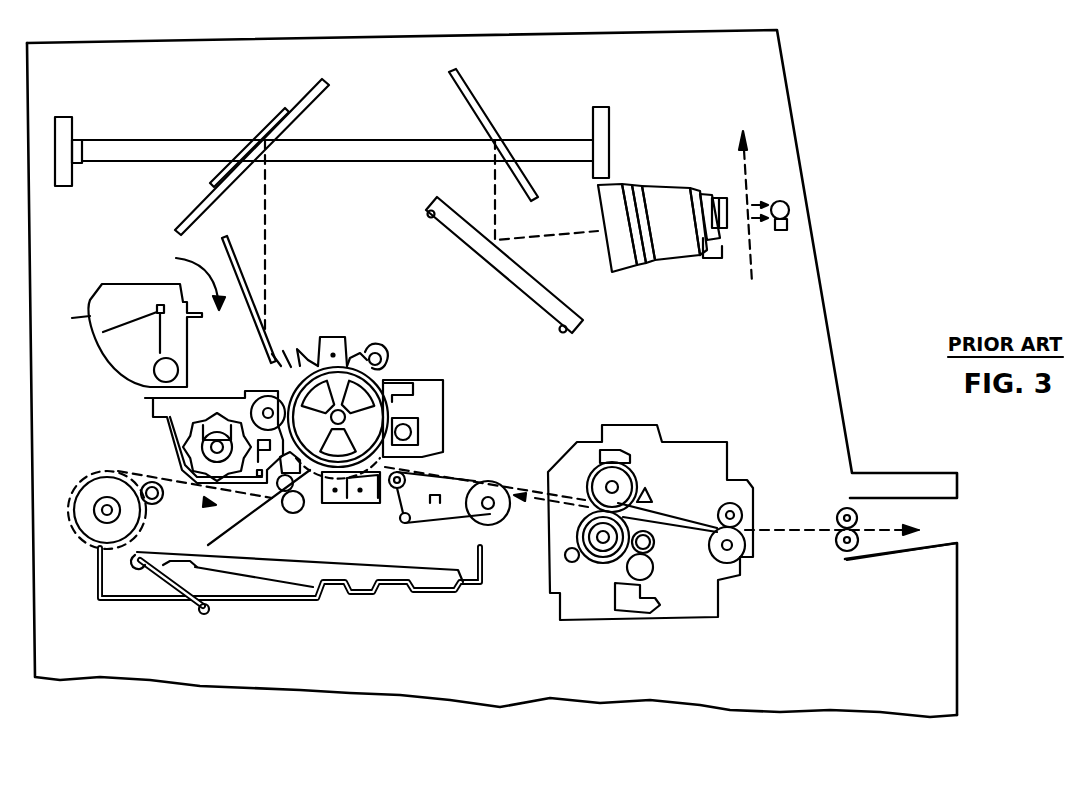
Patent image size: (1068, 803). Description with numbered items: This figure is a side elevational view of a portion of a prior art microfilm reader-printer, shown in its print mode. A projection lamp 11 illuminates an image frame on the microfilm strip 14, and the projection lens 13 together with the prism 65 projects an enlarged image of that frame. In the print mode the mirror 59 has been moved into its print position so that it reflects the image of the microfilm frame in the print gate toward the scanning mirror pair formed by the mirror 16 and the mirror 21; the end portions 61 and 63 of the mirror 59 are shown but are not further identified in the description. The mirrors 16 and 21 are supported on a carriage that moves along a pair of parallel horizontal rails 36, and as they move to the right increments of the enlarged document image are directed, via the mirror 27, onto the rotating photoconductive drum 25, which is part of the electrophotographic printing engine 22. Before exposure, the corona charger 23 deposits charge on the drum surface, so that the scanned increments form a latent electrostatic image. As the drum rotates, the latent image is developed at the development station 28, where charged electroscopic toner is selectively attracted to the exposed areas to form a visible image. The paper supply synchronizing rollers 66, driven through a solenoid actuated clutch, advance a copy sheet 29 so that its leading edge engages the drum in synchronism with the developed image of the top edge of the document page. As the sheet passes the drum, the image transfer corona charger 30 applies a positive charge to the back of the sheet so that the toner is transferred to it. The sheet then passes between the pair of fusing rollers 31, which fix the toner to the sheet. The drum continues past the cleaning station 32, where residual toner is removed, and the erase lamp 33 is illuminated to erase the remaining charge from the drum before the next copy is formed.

The projection lamp 11 is at (781, 201).
The projection lens 13 is at (713, 196).
The microfilm strip 14 is at (752, 266).
The scanning mirror 16 is at (486, 112).
The scanning mirror 21 is at (292, 103).
The electrophotographic printing engine 22 is at (185, 278).
The corona charger 23 is at (333, 335).
The photoconductive drum 25 is at (368, 386).
The mirror 27 is at (224, 237).
The development station 28 is at (219, 397).
The copy sheet 29 is at (246, 500).
The image transfer corona charger 30 is at (357, 508).
The fusing rollers 31 is at (598, 563).
The cleaning station 32 is at (445, 406).
The erase lamp 33 is at (381, 362).
The parallel horizontal rails 36 is at (143, 139).
The mirror 59 is at (524, 271).
The pivot 61 is at (558, 334).
The pivot 63 is at (430, 221).
The prism 65 is at (678, 262).
The paper supply synchronizing rollers 66 is at (293, 515).